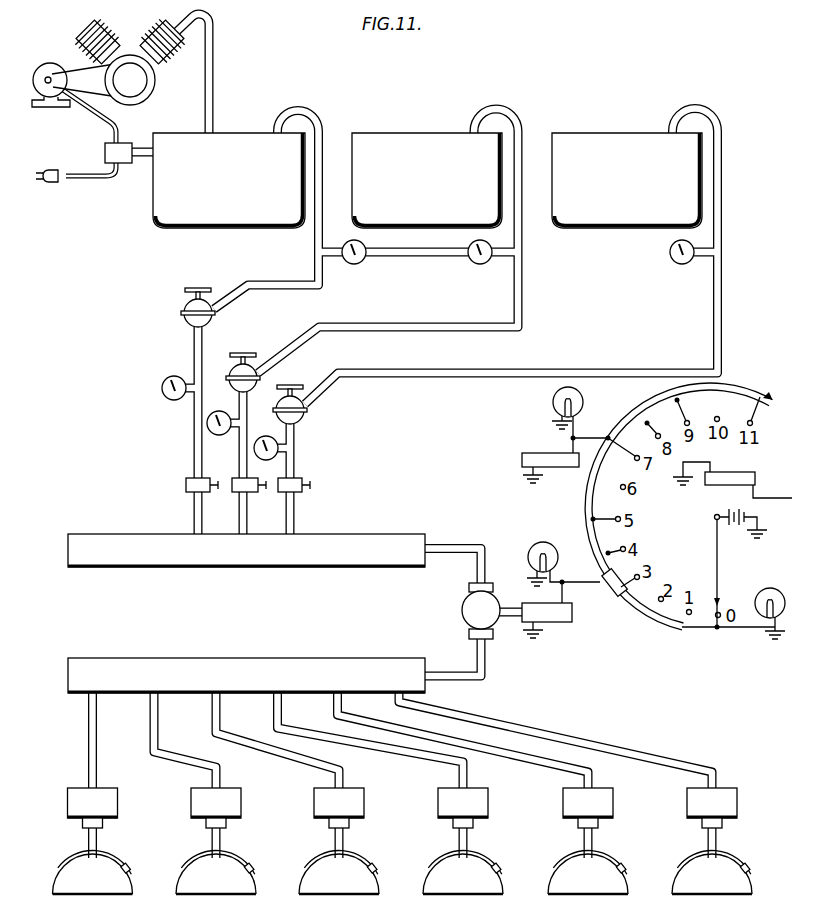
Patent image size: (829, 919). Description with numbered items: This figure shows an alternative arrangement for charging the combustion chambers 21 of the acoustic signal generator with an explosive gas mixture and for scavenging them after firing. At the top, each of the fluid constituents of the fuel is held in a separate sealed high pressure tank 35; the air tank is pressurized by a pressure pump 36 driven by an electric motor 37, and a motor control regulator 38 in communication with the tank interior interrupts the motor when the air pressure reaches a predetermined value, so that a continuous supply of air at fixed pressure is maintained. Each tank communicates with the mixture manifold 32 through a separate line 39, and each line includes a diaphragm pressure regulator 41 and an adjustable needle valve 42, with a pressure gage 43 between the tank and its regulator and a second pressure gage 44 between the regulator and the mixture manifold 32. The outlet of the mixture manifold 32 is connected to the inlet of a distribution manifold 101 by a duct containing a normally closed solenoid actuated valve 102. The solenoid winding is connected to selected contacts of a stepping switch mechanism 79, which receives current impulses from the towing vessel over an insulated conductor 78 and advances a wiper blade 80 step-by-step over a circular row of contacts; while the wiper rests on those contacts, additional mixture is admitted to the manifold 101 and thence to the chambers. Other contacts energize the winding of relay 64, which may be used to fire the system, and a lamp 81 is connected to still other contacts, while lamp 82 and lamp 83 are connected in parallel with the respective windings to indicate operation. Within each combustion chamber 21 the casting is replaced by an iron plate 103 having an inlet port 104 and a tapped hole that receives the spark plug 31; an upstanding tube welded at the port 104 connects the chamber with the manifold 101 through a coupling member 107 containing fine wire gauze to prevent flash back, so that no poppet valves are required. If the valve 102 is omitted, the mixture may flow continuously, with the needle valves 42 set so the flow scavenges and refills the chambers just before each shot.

The combustion chamber 21 is at (722, 889).
The spark plug 31 is at (130, 864).
The mixture manifold 32 is at (357, 534).
The high pressure tank 35 is at (208, 215).
The pressure pump 36 is at (134, 53).
The electric motor 37 is at (45, 62).
The motor control regulator 38 is at (122, 143).
The line 39 is at (194, 444).
The diaphragm pressure regulator 41 is at (234, 367).
The adjustable needle valve 42 is at (236, 494).
The pressure gage 43 is at (467, 252).
The second pressure gage 44 is at (163, 378).
The relay 64 is at (550, 453).
The insulated conductor 78 is at (770, 498).
The stepping switch mechanism 79 is at (735, 472).
The wiper blade 80 is at (720, 571).
The lamp 81 is at (777, 590).
The lamp 82 is at (540, 542).
The lamp 83 is at (553, 408).
The manifold 101 is at (354, 658).
The solenoid actuated valve 102 is at (553, 622).
The iron plate 103 is at (178, 884).
The inlet port 104 is at (66, 866).
The coupling member 107 is at (108, 803).